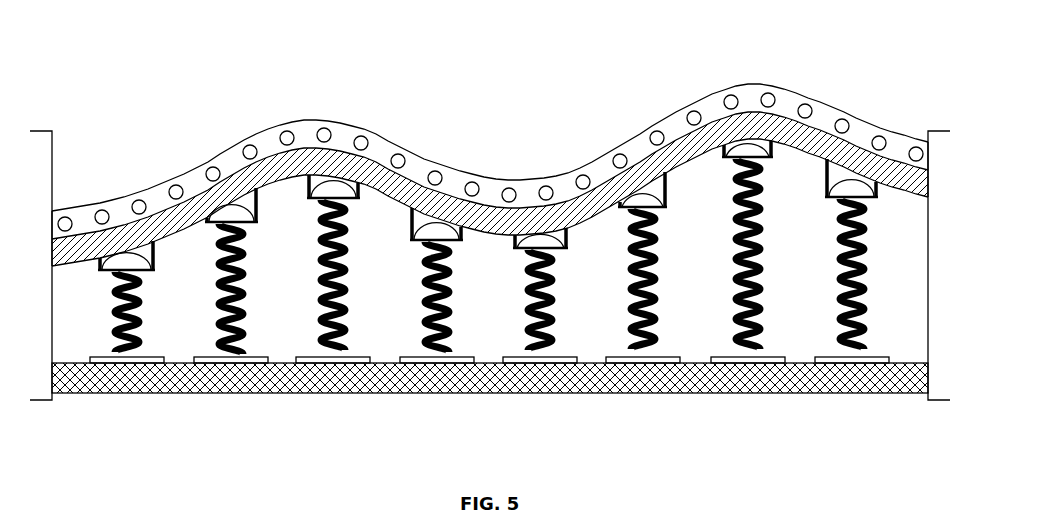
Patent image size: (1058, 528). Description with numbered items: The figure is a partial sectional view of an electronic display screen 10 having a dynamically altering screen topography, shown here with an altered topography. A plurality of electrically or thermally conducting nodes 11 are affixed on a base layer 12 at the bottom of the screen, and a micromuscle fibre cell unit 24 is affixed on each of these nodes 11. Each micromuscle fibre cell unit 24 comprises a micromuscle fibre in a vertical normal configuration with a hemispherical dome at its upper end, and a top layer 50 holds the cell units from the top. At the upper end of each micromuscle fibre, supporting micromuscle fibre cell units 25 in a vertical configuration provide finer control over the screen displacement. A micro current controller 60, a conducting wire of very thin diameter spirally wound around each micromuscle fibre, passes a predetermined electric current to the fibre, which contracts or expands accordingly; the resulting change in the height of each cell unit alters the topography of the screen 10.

The electronic display screen 10 is at (490, 125).
The top layer 50 is at (240, 177).
The supporting micromuscle fibre cell units 25 is at (563, 240).
The micromuscle fibre cell unit 24 is at (817, 173).
The electrically or thermally conducting nodes 11 is at (447, 362).
The base layer 12 is at (213, 383).
The micro current controller 60 is at (742, 335).